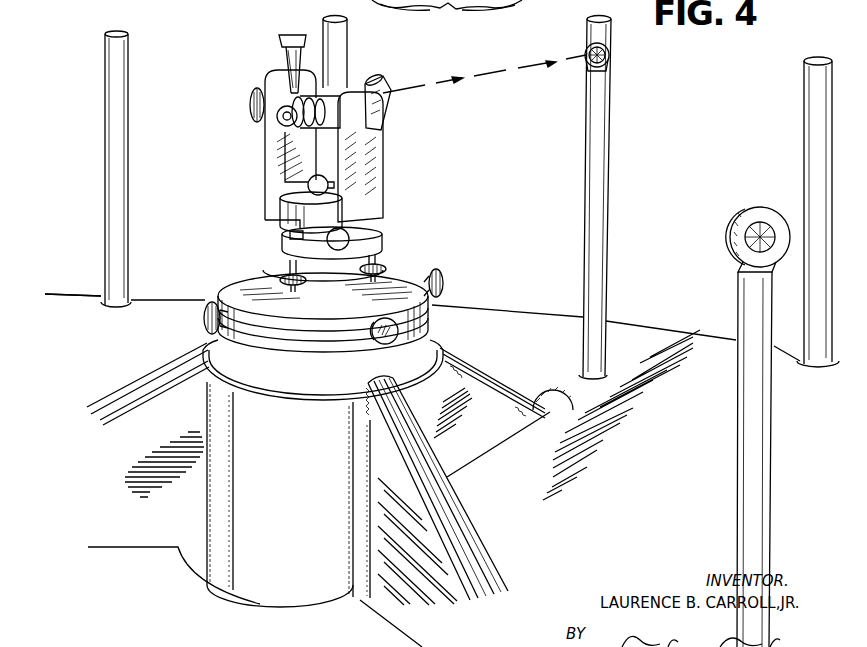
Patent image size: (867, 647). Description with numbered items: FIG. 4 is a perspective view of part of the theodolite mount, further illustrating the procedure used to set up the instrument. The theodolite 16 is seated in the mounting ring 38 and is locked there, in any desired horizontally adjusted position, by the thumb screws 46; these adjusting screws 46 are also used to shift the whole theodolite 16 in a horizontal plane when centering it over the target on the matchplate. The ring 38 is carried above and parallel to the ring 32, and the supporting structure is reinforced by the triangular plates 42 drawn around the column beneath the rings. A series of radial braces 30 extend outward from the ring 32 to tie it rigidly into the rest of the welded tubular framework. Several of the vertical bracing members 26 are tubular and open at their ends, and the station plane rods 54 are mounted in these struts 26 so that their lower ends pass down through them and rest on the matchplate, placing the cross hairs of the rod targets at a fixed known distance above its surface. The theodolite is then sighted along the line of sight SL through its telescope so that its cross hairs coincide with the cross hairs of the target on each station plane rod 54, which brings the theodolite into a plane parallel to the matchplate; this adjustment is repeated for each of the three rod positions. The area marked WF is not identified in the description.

The theodolite 16 is at (390, 178).
The tubular bracing members 26 is at (120, 172).
The radial braces 30 is at (152, 386).
The ring 32 is at (298, 390).
The ring 38 is at (437, 336).
The triangular plates 42 is at (196, 520).
The thumb screws 46 is at (208, 305).
The station plane rods 54 is at (599, 254).
The line of sight SL is at (496, 78).
The work floor WF is at (541, 327).